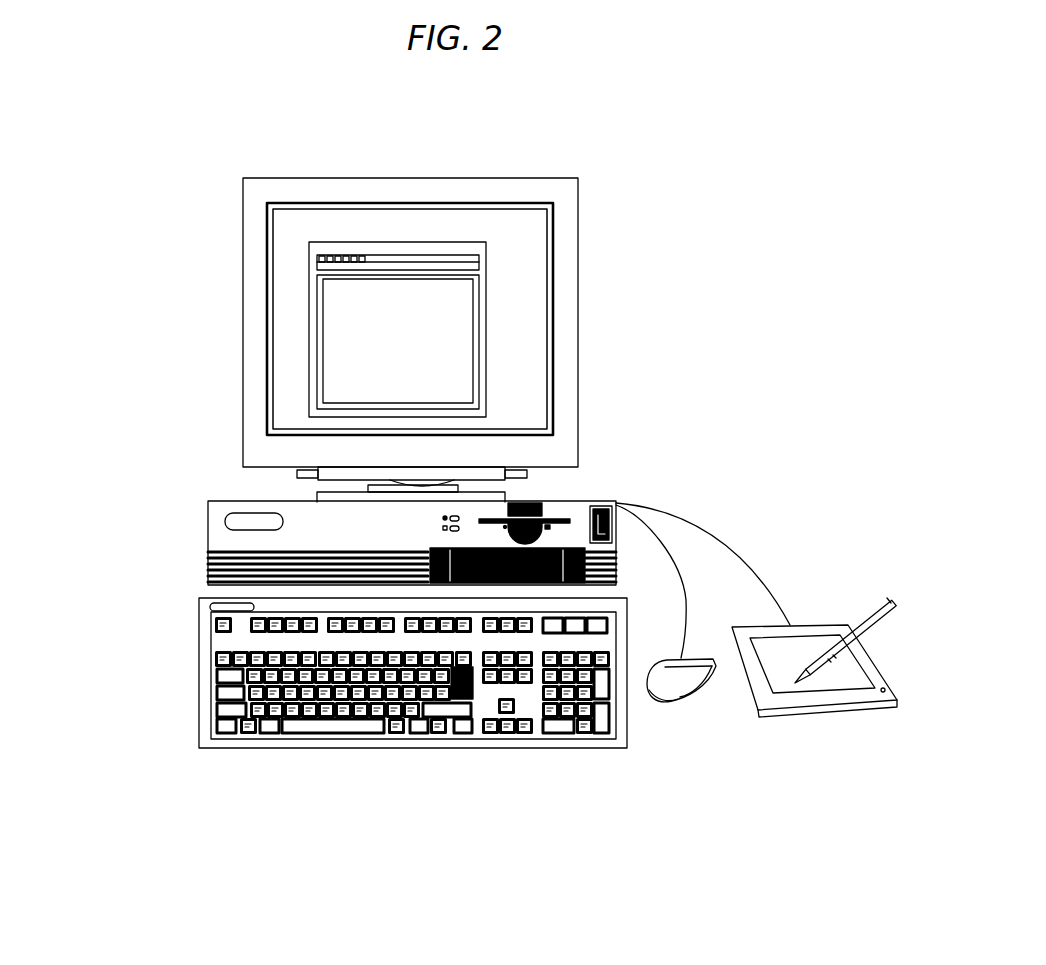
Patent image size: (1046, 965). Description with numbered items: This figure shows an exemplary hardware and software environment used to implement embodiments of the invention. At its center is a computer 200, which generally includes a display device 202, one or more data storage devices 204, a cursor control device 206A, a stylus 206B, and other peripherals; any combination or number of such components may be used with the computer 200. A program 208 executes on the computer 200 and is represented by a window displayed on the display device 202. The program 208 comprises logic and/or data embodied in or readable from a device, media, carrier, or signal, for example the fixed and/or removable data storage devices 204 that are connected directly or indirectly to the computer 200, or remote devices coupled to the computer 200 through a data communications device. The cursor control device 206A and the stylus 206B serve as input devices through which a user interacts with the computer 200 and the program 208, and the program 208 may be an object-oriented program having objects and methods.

The computer 200 is at (210, 522).
The display device 202 is at (555, 173).
The data storage device 204 is at (560, 515).
The cursor control device 206A is at (683, 718).
The stylus 206B is at (833, 720).
The program 208 is at (488, 327).